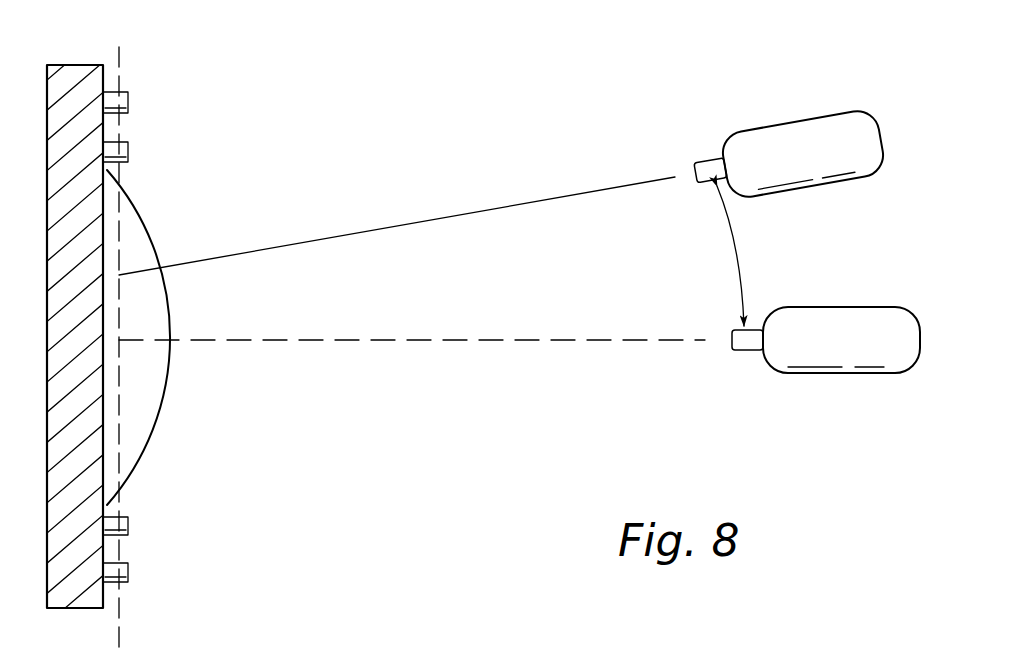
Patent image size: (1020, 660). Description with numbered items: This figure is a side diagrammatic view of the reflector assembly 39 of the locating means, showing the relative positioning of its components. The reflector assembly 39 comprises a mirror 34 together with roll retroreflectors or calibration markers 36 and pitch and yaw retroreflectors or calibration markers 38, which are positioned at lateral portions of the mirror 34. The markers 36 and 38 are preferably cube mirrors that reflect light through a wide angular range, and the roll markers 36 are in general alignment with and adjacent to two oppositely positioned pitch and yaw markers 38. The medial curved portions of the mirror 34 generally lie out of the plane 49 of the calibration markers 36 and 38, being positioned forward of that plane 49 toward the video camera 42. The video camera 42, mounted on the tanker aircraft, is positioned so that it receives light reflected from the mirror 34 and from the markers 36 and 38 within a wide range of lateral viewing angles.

The mirror 34 is at (163, 217).
The roll retroreflectors or calibration markers 36 is at (128, 568).
The pitch and yaw retroreflectors or calibration markers 38 is at (128, 523).
The reflector assembly 39 is at (109, 69).
The video camera 42 is at (797, 123).
The plane of the calibration markers 49 is at (127, 633).